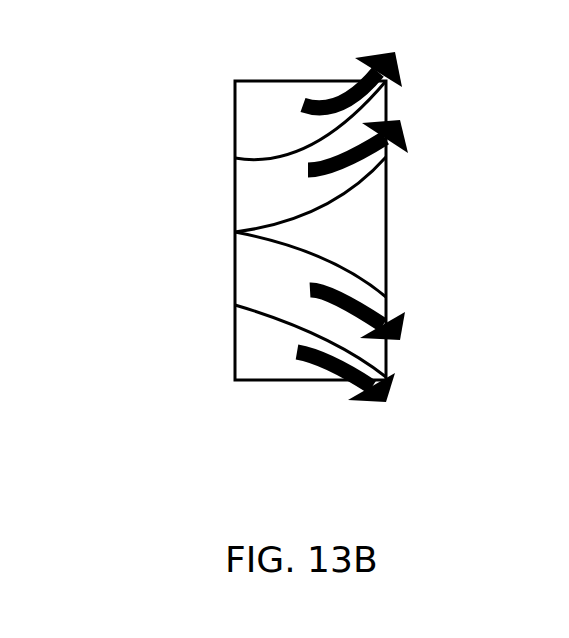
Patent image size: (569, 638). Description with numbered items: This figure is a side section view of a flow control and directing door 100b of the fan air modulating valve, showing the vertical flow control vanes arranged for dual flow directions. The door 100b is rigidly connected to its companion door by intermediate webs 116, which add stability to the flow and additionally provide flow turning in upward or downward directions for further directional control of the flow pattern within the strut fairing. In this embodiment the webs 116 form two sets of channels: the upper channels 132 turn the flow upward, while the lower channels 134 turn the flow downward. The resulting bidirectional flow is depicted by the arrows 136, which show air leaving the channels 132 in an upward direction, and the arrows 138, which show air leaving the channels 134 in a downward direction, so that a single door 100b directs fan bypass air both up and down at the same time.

The flow control and directing door 100b is at (258, 105).
The channel 132 is at (268, 127).
The channel 134 is at (272, 280).
The intermediate web 116 is at (280, 147).
The arrow 136 is at (400, 140).
The arrow 138 is at (407, 320).